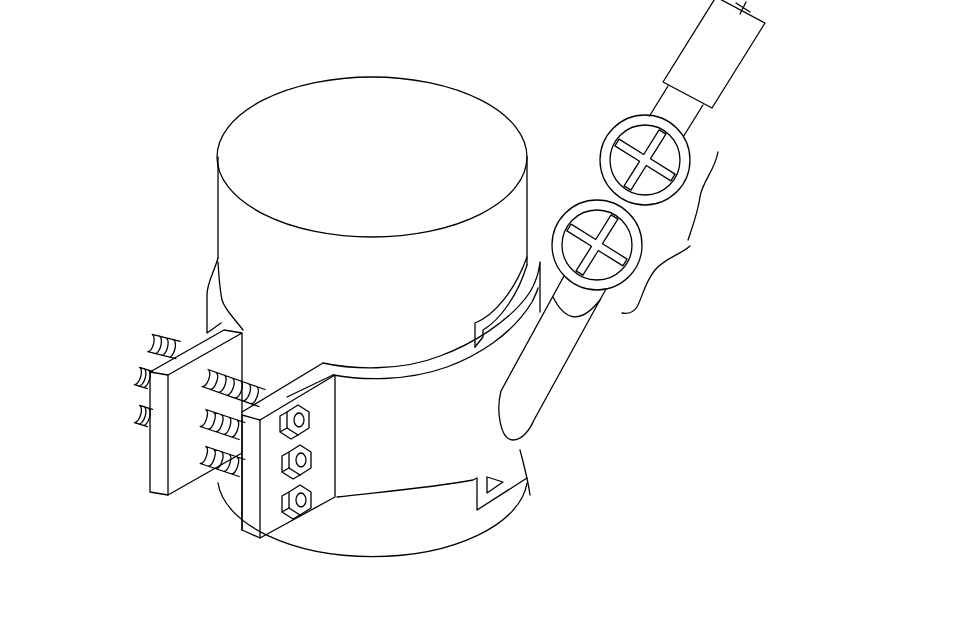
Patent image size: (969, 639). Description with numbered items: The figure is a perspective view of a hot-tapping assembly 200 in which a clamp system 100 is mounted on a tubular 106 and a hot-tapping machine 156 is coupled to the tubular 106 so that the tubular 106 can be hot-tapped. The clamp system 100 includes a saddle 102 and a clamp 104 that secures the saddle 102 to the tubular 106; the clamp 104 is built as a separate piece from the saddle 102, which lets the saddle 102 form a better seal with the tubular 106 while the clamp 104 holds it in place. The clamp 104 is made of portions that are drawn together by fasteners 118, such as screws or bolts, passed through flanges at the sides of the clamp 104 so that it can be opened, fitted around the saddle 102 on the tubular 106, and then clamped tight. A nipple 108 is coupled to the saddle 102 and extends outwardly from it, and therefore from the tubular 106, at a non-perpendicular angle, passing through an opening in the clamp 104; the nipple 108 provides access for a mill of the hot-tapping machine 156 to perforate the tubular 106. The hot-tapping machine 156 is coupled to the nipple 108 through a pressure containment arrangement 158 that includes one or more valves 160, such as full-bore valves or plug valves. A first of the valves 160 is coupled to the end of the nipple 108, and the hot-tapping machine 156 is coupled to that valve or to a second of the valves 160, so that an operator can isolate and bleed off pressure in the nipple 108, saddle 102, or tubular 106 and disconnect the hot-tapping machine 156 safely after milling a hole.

The clamp system 100 is at (708, 411).
The saddle 102 is at (472, 433).
The clamp 104 is at (518, 468).
The tubular 106 is at (381, 326).
The nipple 108 is at (555, 340).
The fasteners 118 is at (145, 342).
The hot-tapping machine 156 is at (732, 57).
The pressure containment arrangement 158 is at (677, 232).
The valves 160 is at (630, 117).
The hot-tapping assembly 200 is at (300, 31).